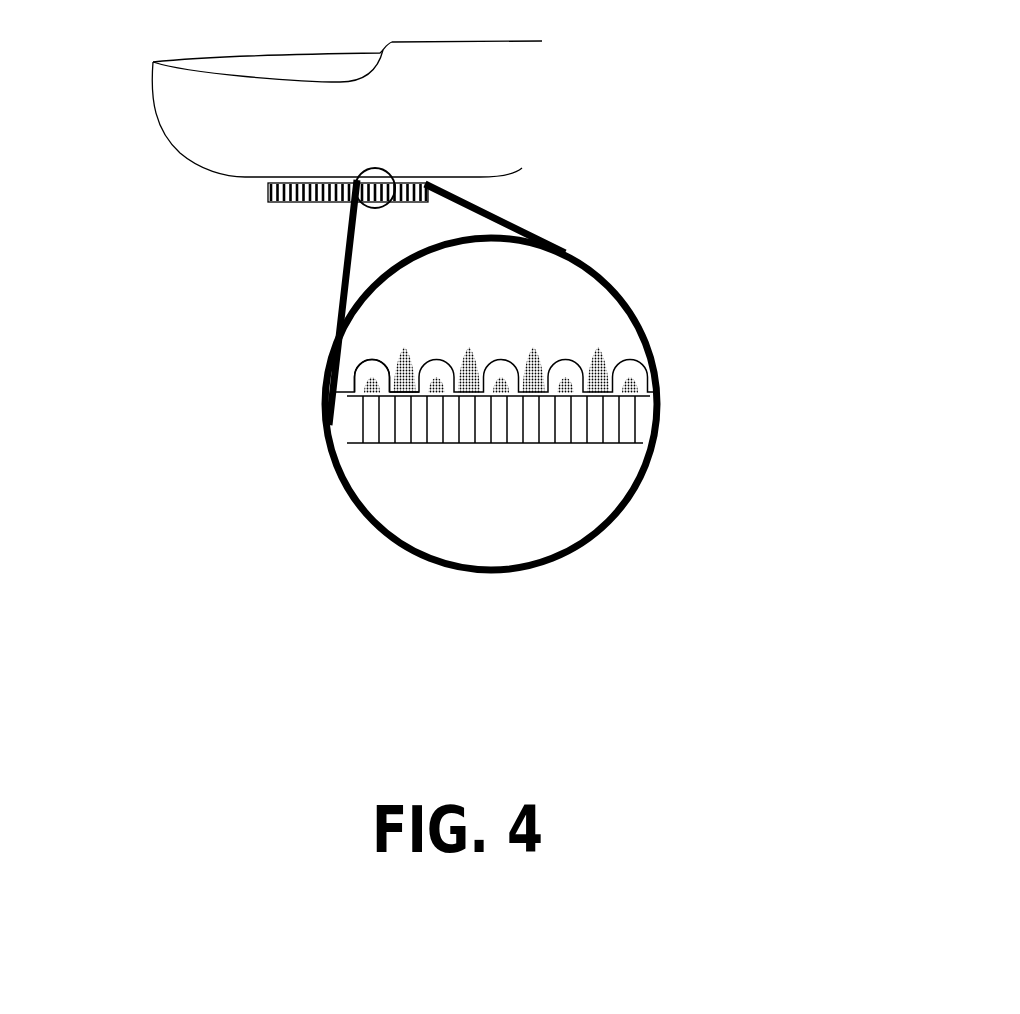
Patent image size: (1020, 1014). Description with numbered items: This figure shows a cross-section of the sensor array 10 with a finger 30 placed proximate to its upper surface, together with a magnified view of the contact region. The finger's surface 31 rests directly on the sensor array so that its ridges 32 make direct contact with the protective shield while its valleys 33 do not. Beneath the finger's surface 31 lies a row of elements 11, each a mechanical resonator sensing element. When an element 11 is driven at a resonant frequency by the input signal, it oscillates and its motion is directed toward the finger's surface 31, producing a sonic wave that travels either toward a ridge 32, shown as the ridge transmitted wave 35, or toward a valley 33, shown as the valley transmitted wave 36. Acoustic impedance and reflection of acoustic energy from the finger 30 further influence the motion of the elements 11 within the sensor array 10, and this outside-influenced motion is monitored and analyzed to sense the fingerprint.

The finger 30 is at (137, 106).
The sensor array 10 is at (268, 202).
The element 11 is at (298, 203).
The finger's surface 31 is at (268, 185).
The ridges 32 is at (404, 346).
The valleys 33 is at (372, 359).
The sonic wave 35 is at (607, 355).
The sonic wave 36 is at (563, 373).